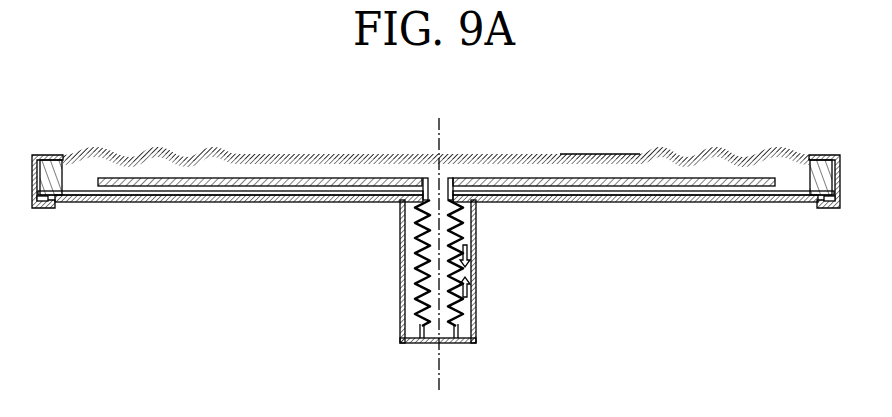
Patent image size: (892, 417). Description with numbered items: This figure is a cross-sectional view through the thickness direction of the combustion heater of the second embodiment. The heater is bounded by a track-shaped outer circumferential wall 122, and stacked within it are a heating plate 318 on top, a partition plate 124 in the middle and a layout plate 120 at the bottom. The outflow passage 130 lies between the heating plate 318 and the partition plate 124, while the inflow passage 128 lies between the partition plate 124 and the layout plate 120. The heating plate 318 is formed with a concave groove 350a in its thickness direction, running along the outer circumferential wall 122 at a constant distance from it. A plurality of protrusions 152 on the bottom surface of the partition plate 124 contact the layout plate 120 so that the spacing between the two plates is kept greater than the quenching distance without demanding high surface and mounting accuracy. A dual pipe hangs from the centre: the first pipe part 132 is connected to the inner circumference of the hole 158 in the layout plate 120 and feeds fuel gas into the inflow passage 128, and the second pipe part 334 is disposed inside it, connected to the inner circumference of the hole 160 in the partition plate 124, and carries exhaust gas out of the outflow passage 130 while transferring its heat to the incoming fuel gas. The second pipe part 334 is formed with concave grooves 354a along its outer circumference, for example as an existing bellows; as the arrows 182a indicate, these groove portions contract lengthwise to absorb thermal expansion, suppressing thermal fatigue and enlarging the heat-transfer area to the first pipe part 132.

The layout plate 120 is at (578, 203).
The outer circumferential wall 122 is at (812, 182).
The partition plate 124 is at (510, 178).
The inflow passage 128 is at (222, 194).
The outflow passage 130 is at (222, 170).
The first pipe part 132 is at (477, 306).
The protrusions 152 is at (718, 203).
The hole 158 is at (423, 178).
The hole 160 is at (453, 178).
The arrows 182a is at (470, 252).
The heating plate 318 is at (593, 154).
The second pipe part 334 is at (462, 343).
The concave groove 350a is at (690, 153).
The concave grooves 354a is at (422, 308).